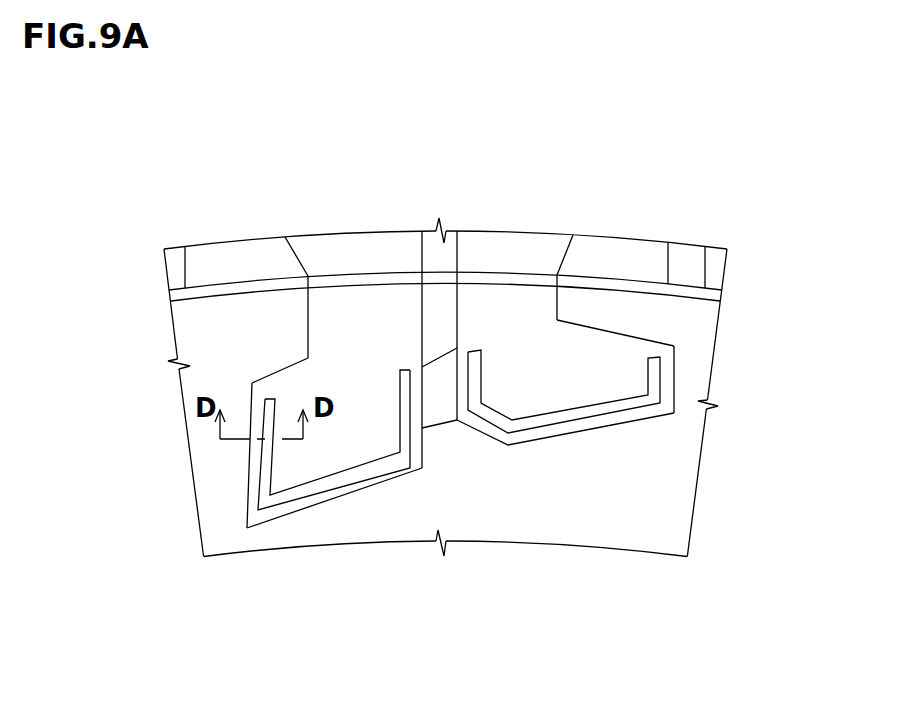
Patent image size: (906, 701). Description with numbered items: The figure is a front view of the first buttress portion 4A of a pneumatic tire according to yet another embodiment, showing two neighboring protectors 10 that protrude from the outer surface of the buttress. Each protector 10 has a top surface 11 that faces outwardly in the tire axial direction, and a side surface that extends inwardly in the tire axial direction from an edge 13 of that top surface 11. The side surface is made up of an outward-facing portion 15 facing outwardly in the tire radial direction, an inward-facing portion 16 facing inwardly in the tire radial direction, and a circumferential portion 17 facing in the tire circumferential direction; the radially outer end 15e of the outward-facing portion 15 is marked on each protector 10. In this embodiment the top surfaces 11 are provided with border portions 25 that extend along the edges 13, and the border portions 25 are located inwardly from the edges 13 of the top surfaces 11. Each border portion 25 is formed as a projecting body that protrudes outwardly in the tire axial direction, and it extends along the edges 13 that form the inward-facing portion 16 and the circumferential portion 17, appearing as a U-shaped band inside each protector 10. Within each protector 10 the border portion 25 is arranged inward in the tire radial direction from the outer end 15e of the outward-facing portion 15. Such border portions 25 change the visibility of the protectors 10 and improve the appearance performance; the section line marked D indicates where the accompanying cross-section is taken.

The first buttress portion 4A is at (243, 202).
The protector 10 is at (222, 488).
The top surface 11 is at (366, 312).
The edge 13 is at (283, 513).
The outward-facing portion 15 is at (275, 367).
The outer end 15e is at (308, 357).
The inward-facing portion 16 is at (392, 477).
The circumferential portion 17 is at (250, 458).
The border portion 25 is at (343, 473).